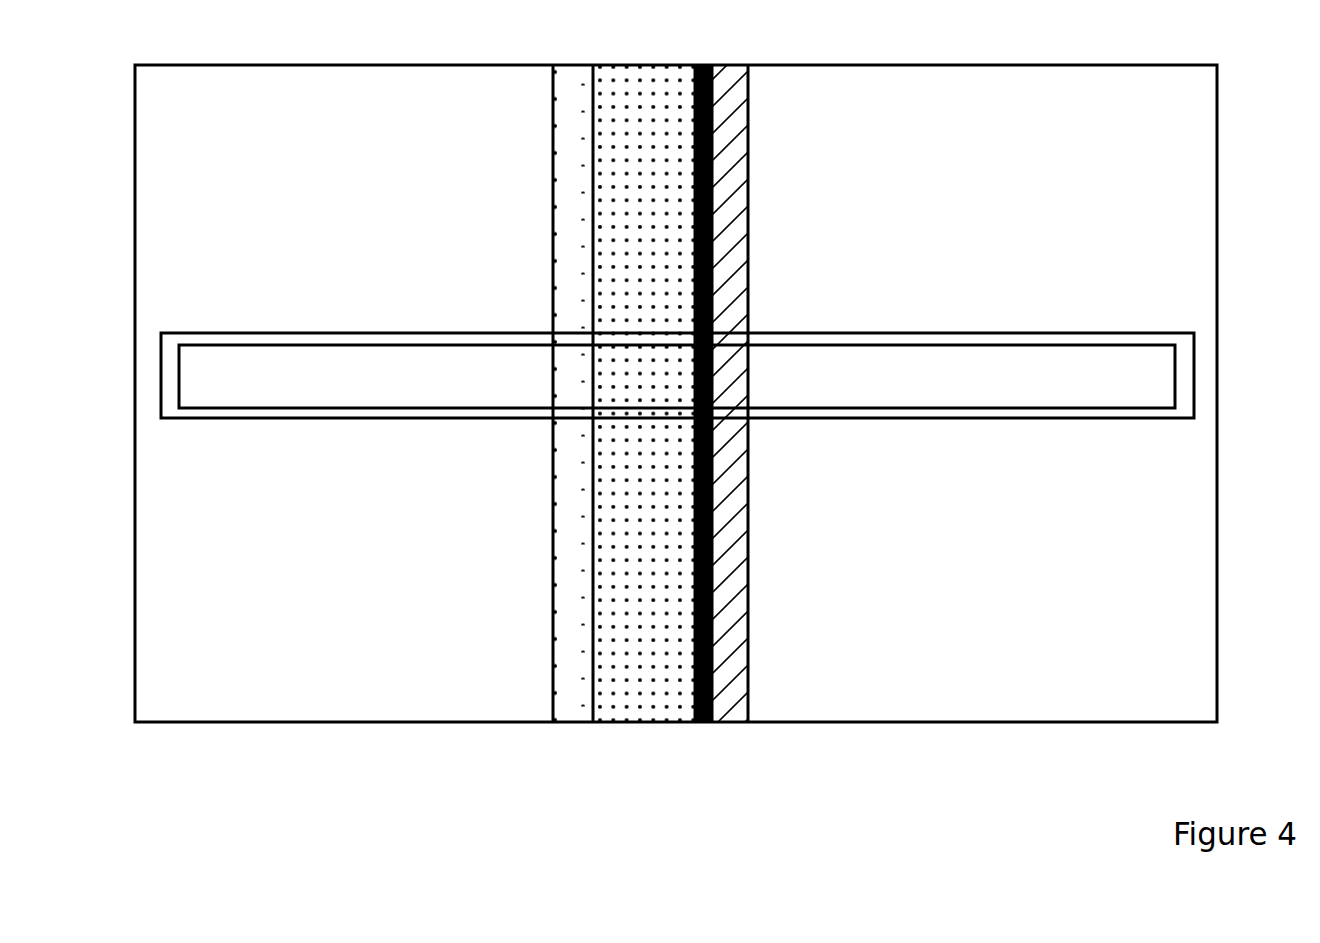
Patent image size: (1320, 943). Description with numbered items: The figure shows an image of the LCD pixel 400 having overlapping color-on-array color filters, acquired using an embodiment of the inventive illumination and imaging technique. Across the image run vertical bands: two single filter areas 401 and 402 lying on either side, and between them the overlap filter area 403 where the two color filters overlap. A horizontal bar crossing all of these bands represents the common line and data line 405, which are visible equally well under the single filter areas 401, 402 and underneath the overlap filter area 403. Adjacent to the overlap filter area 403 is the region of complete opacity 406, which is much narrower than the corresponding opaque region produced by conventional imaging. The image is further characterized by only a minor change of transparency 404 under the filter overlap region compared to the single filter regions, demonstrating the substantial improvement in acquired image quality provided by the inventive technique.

The image of the LCD pixel 400 is at (926, 35).
The single filter area 401 is at (583, 652).
The single filter area 402 is at (727, 628).
The overlap filter area 403 is at (675, 617).
The minor change of transparency under the filter overlap region 404 is at (733, 532).
The visible common line and data line 405 is at (737, 333).
The region of complete opacity 406 is at (709, 97).